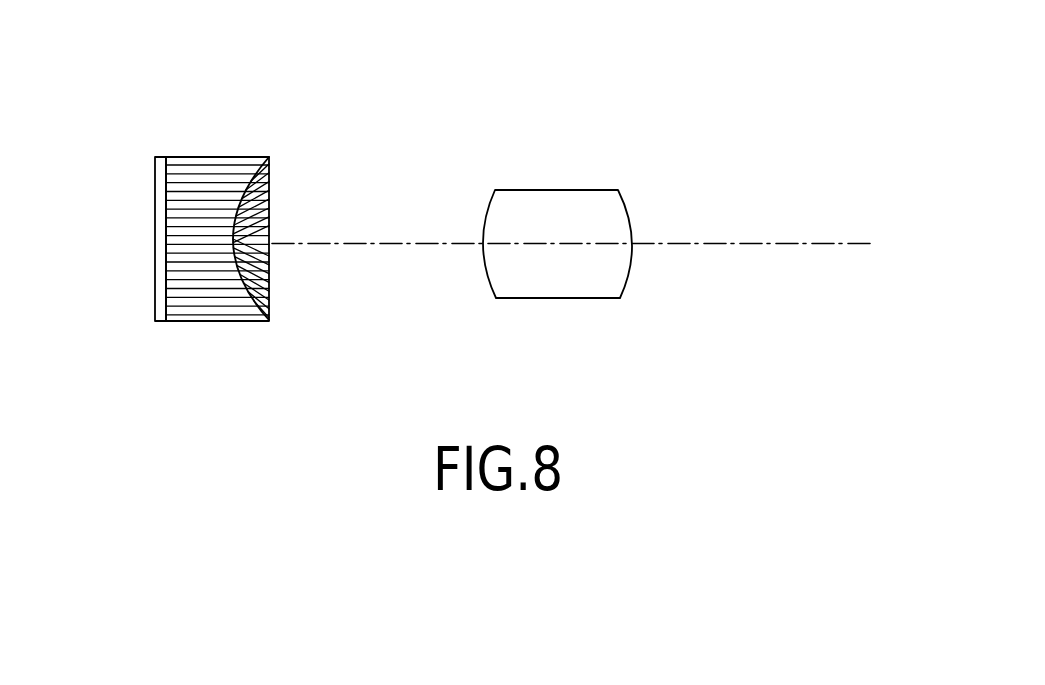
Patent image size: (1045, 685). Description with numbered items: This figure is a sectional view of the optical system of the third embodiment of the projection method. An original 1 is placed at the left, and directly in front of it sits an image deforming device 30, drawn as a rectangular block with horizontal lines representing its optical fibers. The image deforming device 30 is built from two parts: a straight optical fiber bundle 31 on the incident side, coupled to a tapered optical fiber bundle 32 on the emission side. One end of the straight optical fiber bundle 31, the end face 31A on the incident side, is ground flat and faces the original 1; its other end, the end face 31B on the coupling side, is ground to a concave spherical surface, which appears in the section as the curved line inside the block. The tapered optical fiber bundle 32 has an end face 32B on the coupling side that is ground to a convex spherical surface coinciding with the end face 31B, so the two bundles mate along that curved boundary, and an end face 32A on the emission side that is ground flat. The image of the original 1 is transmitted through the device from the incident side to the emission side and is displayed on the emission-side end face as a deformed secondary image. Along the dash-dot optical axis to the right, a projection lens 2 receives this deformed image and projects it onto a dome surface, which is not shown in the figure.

The original 1 is at (165, 263).
The projection lens 2 is at (598, 200).
The image deforming device 30 is at (230, 220).
The straight optical fiber bundle 31 is at (148, 194).
The end face on the incident side 31A is at (167, 181).
The end face on the coupling side 31B is at (243, 287).
The tapered optical fiber bundle 32 is at (322, 220).
The end face on the emission side 32A is at (236, 250).
The end face on the coupling side 32B is at (238, 263).